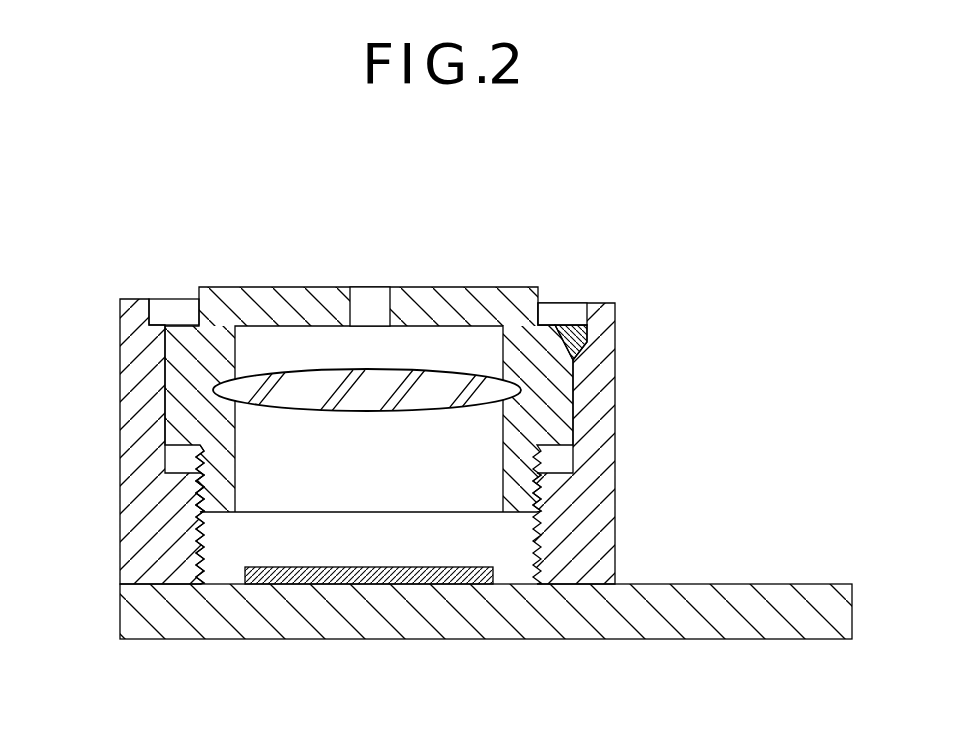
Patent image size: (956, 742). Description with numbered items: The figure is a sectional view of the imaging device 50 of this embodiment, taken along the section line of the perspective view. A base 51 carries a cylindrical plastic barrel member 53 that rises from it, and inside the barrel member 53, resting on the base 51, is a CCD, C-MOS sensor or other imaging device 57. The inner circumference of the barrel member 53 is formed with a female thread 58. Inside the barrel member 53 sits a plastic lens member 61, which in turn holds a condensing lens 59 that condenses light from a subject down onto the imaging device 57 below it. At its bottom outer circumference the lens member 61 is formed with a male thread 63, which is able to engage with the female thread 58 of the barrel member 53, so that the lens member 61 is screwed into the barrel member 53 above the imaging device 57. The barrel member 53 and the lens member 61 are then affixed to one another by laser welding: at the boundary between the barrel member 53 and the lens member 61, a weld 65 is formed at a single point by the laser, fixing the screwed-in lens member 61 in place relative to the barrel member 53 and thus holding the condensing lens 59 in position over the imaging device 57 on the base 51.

The imaging device 50 is at (271, 252).
The base 51 is at (693, 597).
The barrel member 53 is at (612, 422).
The imaging device 57 is at (306, 578).
The female thread 58 is at (197, 530).
The condensing lens 59 is at (277, 377).
The lens member 61 is at (535, 350).
The male thread 63 is at (205, 465).
The weld 65 is at (570, 337).